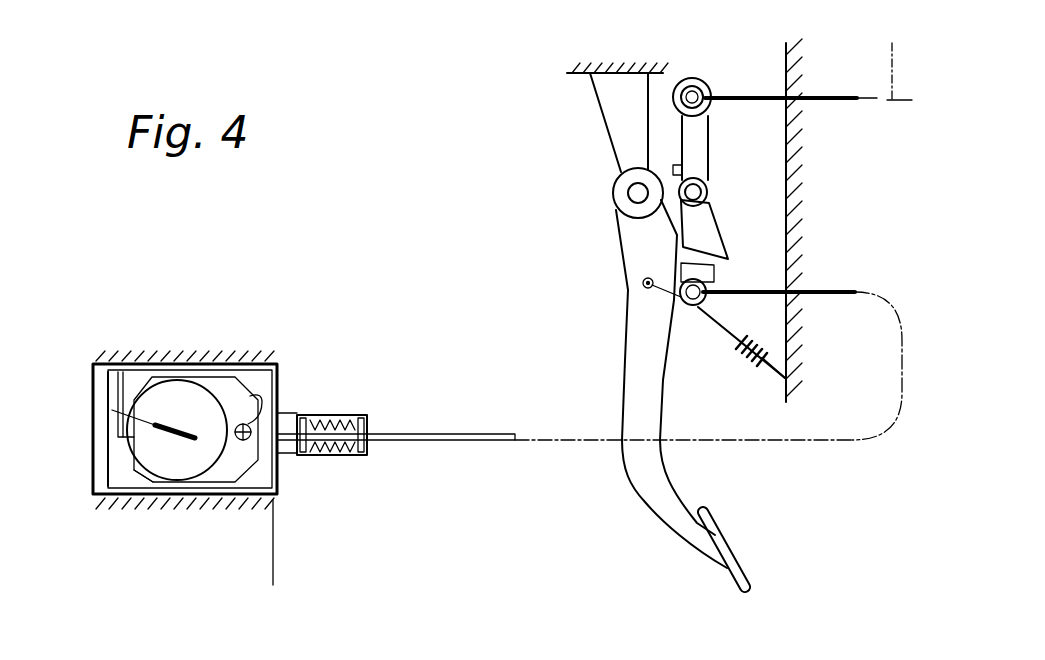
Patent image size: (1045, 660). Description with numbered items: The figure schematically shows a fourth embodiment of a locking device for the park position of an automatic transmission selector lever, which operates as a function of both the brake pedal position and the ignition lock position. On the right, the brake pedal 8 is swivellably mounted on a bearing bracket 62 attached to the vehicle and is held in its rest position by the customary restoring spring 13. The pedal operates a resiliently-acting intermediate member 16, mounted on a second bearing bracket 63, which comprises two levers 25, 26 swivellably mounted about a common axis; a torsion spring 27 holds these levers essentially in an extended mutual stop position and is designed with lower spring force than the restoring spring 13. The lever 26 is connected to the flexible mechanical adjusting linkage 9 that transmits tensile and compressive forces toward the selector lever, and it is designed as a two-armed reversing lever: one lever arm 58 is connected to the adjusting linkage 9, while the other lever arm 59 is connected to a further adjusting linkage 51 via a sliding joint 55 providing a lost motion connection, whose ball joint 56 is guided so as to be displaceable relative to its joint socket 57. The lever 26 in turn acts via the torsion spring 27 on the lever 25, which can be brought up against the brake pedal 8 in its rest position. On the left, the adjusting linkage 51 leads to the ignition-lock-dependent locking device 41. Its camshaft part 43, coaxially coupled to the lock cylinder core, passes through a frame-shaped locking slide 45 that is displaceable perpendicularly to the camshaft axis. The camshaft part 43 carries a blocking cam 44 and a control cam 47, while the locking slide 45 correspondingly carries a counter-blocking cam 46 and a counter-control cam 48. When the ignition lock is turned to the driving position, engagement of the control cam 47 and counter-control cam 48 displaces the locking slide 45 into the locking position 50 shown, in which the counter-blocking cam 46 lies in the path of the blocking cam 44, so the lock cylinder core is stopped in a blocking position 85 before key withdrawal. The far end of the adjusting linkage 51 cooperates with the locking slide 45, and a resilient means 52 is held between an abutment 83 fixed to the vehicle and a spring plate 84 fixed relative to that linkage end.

The brake pedal 8 is at (640, 498).
The adjusting linkage 9 is at (898, 59).
The restoring spring 13 is at (742, 382).
The intermediate member 16 is at (701, 210).
The lever 25 is at (712, 248).
The lever 26 is at (714, 110).
The torsion spring 27 is at (682, 190).
The locking device 41 is at (223, 338).
The camshaft part 43 is at (214, 480).
The blocking cam 44 is at (124, 438).
The locking slide 45 is at (104, 444).
The counter-blocking cam 46 is at (120, 374).
The control cam 47 is at (177, 378).
The counter-control cam 48 is at (246, 402).
The locking position 50 is at (277, 514).
The adjusting linkage 51 is at (549, 441).
The resilient means 52 is at (355, 413).
The sliding joint 55 is at (700, 310).
The ball joint 56 is at (643, 284).
The joint socket 57 is at (697, 322).
The lever arm 58 is at (707, 148).
The lever arm 59 is at (683, 240).
The bearing bracket 62 is at (612, 92).
The bearing bracket 63 is at (763, 193).
The abutment 83 is at (355, 455).
The spring plate 84 is at (303, 455).
The blocking position 85 is at (96, 410).